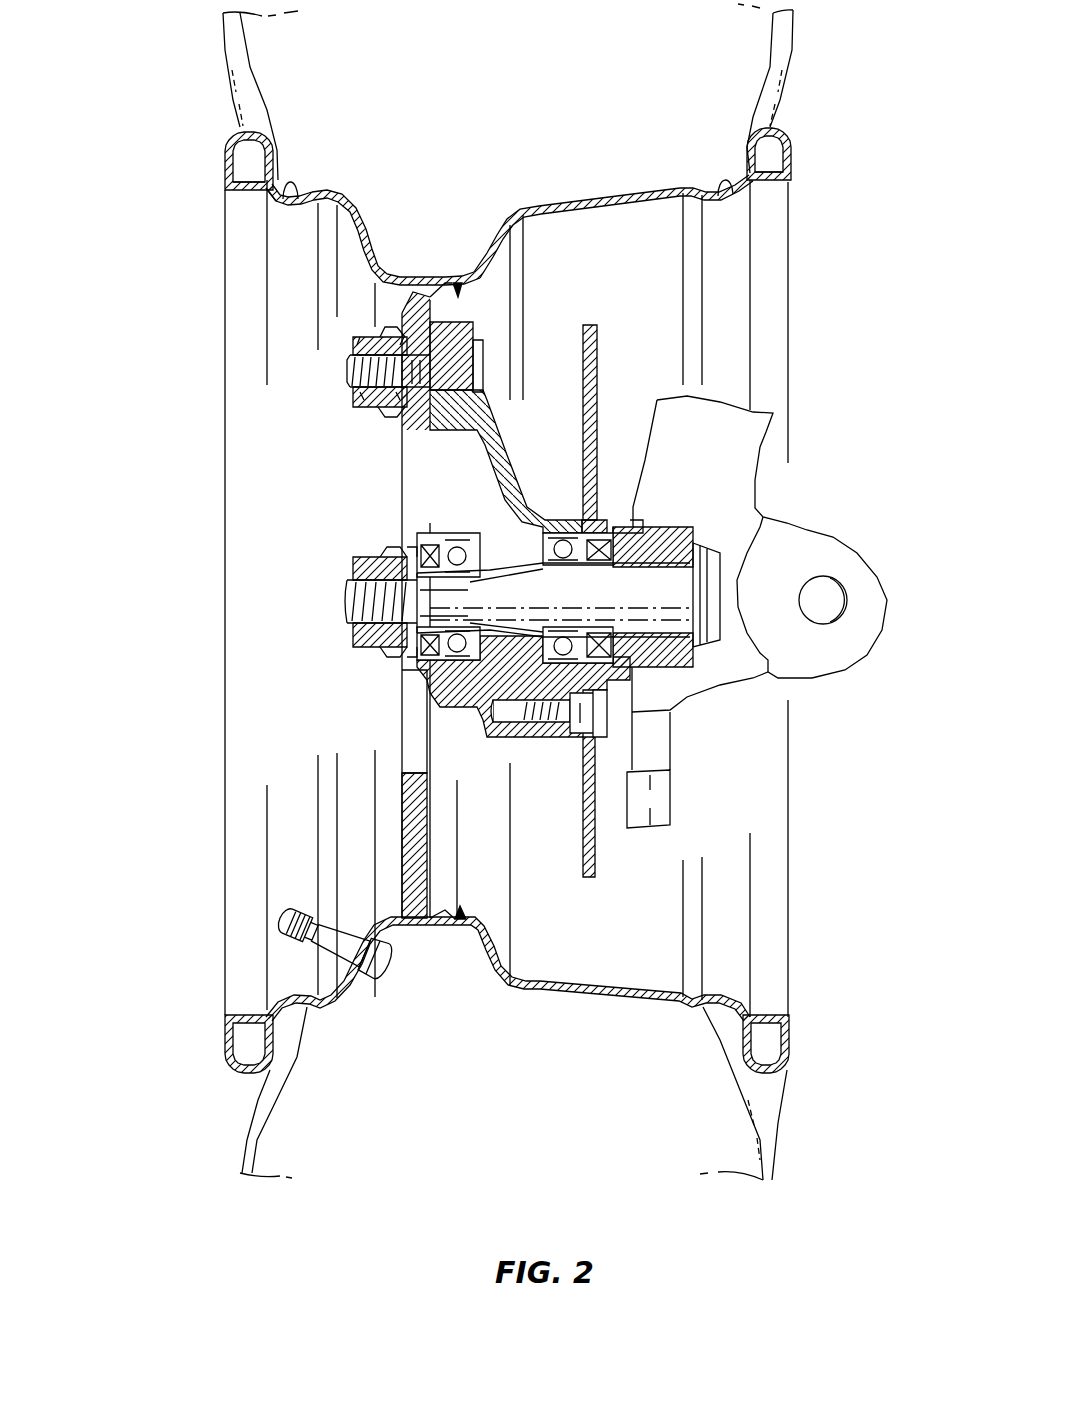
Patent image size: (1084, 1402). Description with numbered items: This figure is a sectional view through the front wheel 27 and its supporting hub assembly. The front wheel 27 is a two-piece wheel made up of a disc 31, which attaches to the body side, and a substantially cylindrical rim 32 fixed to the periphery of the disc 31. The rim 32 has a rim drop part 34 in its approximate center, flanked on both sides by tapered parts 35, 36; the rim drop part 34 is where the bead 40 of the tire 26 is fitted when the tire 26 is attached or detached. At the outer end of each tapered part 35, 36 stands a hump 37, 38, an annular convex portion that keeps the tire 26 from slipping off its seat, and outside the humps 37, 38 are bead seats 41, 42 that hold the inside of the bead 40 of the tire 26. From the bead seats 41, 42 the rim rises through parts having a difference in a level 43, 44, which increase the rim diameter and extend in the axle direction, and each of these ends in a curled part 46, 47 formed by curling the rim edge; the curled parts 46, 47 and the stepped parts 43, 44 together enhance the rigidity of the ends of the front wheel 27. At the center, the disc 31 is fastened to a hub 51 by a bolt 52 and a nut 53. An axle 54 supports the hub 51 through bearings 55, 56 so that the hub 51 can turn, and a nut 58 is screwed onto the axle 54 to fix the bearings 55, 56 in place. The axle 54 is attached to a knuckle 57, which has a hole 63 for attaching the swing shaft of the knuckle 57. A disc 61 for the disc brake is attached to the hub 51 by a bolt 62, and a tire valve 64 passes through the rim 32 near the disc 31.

The tire 26 is at (793, 43).
The front wheel 27 is at (223, 168).
The disc 31 is at (400, 798).
The rim 32 is at (535, 207).
The rim drop part 34 is at (368, 232).
The tapered part 35 is at (334, 199).
The tapered part 36 is at (620, 198).
The hump 37 is at (313, 193).
The hump 38 is at (690, 187).
The bead 40 is at (290, 182).
The bead seat 41 is at (280, 197).
The bead seat 42 is at (745, 192).
The part having a difference in a level 43 is at (256, 196).
The part having a difference in a level 44 is at (769, 195).
The curled part 46 is at (230, 133).
The curled part 47 is at (787, 133).
The hub 51 is at (483, 460).
The bolt 52 is at (483, 380).
The nut 53 is at (367, 407).
The axle 54 is at (346, 598).
The bearing 55 is at (473, 541).
The bearing 56 is at (570, 530).
The knuckle 57 is at (763, 445).
The nut 58 is at (380, 645).
The disc 61 is at (585, 830).
The bolt 62 is at (540, 727).
The hole 63 is at (827, 605).
The tire valve 64 is at (393, 960).